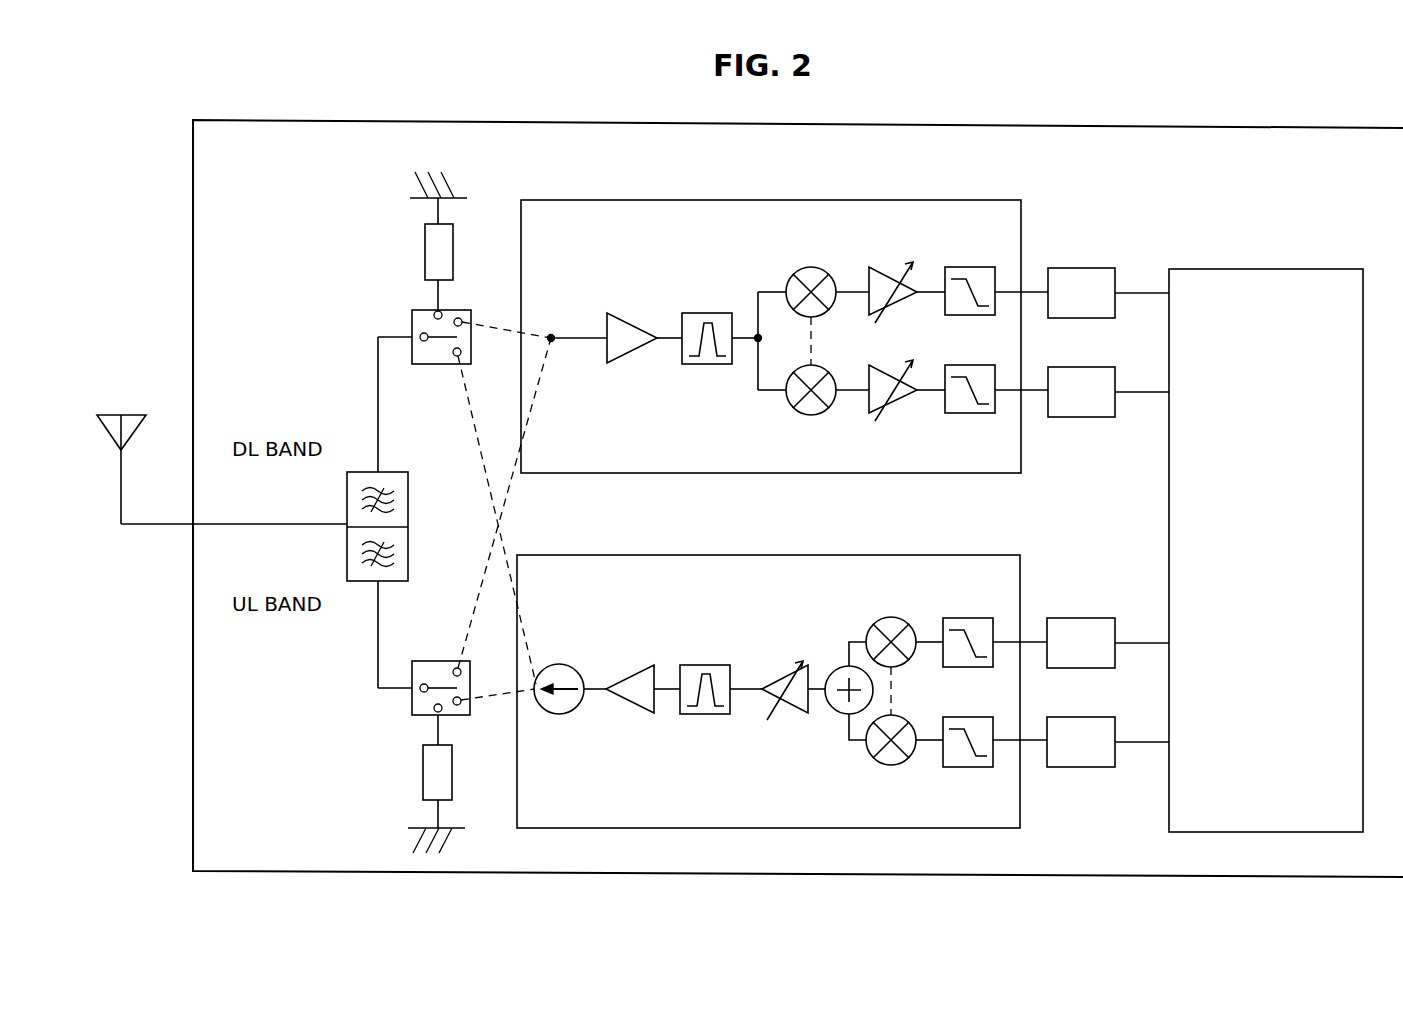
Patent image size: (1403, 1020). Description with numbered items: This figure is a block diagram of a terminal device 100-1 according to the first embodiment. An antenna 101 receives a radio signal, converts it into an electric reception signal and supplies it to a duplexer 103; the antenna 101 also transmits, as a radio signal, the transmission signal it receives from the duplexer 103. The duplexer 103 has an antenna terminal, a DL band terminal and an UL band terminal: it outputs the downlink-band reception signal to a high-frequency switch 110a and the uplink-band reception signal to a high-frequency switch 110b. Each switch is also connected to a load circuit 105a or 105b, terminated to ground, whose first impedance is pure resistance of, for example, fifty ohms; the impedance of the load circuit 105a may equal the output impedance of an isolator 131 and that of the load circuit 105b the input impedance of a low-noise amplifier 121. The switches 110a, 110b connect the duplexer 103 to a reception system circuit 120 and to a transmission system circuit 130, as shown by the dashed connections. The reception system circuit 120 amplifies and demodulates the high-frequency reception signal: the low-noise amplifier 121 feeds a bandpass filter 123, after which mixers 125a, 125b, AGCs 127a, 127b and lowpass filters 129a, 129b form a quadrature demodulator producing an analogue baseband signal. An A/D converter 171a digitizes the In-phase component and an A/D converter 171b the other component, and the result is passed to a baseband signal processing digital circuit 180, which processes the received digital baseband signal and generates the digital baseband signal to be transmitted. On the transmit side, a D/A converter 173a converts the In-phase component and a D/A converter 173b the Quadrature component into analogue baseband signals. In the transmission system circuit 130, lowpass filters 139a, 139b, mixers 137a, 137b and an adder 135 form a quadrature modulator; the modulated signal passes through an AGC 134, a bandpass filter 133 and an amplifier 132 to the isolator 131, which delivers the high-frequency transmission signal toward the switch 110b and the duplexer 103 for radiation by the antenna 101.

The terminal device 100-1 is at (1233, 126).
The antenna 101 is at (106, 412).
The duplexer 103 is at (347, 551).
The load circuit 105a is at (425, 249).
The load circuit 105b is at (423, 771).
The high-frequency switch 110a is at (440, 365).
The high-frequency switch 110b is at (442, 661).
The reception system circuit 120 is at (933, 200).
The low-noise amplifier 121 is at (629, 320).
The bandpass filter 123 is at (704, 313).
The mixer 125a is at (811, 267).
The mixer 125b is at (813, 416).
The AGC 127a is at (886, 270).
The AGC 127b is at (897, 409).
The lowpass filter 129a is at (968, 267).
The lowpass filter 129b is at (970, 414).
The transmission system circuit 130 is at (925, 555).
The isolator 131 is at (557, 714).
The amplifier 132 is at (627, 672).
The bandpass filter 133 is at (704, 665).
The AGC 134 is at (788, 680).
The adder 135 is at (834, 710).
The mixer 137a is at (890, 617).
The mixer 137b is at (890, 765).
The lowpass filter 139a is at (966, 618).
The lowpass filter 139b is at (968, 767).
The A/D converter 171a is at (1080, 268).
The A/D converter 171b is at (1083, 418).
The D/A converter 173a is at (1080, 618).
The D/A converter 173b is at (1080, 767).
The baseband signal processing digital circuit 180 is at (1267, 269).